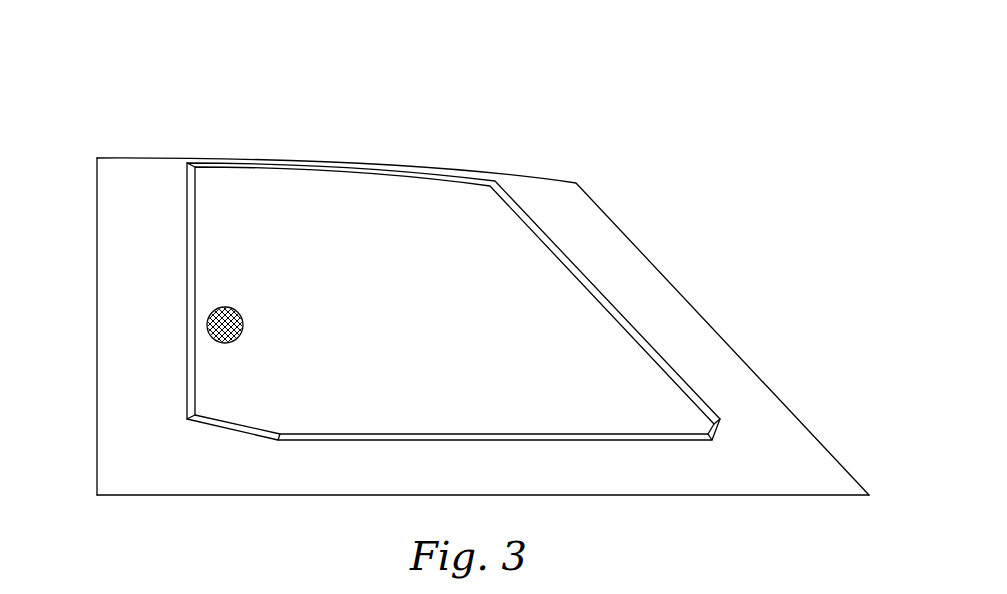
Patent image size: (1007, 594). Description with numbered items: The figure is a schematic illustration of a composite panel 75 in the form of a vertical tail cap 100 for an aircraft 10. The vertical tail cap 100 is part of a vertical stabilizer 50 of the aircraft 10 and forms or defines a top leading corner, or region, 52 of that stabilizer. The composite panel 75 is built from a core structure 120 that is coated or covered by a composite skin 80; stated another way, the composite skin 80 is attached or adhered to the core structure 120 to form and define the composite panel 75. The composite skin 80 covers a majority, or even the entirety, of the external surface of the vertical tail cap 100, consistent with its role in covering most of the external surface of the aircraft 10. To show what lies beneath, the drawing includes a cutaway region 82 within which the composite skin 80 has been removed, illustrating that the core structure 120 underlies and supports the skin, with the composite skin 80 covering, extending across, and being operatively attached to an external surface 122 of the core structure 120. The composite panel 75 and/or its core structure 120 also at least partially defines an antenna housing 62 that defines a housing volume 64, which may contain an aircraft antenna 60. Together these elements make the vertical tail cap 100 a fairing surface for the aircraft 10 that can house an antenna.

The aircraft 10 is at (745, 50).
The vertical stabilizer 50 is at (717, 104).
The top leading corner 52 is at (612, 180).
The composite panel 75 is at (97, 240).
The composite skin 80 is at (290, 455).
The vertical tail cap 100 is at (151, 151).
The aircraft antenna 60 is at (467, 194).
The antenna housing 62 is at (331, 194).
The housing volume 64 is at (404, 194).
The core structure 120 is at (208, 313).
The cutaway region 82 is at (227, 350).
The external surface 122 is at (243, 317).